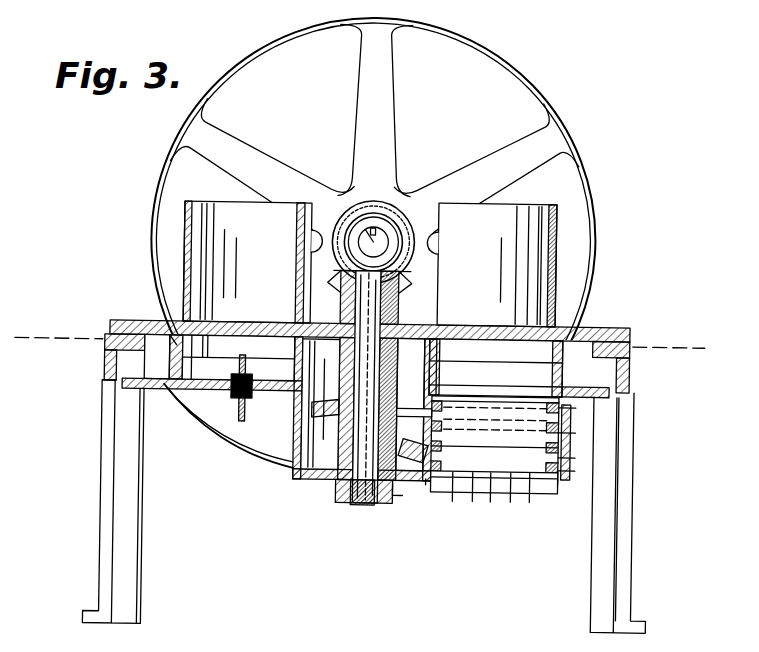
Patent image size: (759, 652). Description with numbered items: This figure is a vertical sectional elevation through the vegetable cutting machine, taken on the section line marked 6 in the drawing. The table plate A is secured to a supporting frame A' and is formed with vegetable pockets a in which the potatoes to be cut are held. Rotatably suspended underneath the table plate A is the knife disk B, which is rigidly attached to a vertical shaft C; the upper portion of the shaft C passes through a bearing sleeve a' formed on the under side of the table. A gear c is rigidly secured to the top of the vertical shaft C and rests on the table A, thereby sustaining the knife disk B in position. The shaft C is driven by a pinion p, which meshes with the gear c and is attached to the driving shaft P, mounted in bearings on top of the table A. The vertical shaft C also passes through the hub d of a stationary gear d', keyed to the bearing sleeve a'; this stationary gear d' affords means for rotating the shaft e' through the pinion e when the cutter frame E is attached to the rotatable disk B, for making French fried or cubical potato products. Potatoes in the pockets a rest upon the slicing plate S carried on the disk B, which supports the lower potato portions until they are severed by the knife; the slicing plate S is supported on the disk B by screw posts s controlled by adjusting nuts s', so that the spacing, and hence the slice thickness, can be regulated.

The driving shaft P is at (353, 222).
The pinion p is at (383, 211).
The vegetable pocket a is at (247, 262).
The bearing sleeve a' is at (476, 337).
The gear c is at (340, 296).
The table plate A is at (396, 320).
The supporting frame A' is at (365, 507).
The section line 6 is at (367, 342).
The knife disk B is at (192, 394).
The slicing plate S is at (272, 348).
The screw post s is at (236, 365).
The adjusting nut s' is at (255, 382).
The vertical shaft C is at (365, 388).
The hub d is at (295, 414).
The stationary gear d' is at (229, 438).
The cutter frame E is at (512, 528).
The pinion e is at (413, 477).
The shaft e' is at (504, 478).